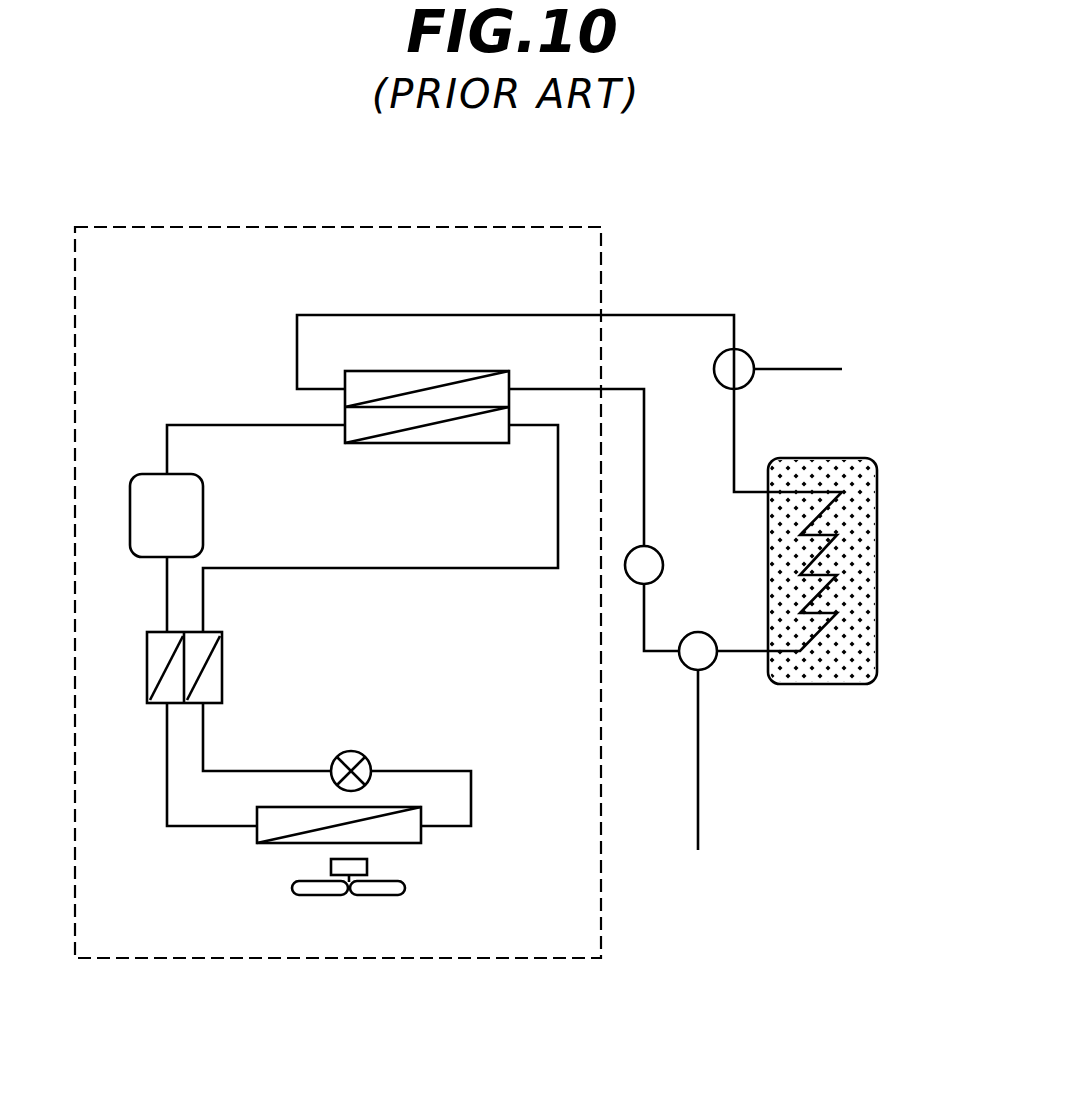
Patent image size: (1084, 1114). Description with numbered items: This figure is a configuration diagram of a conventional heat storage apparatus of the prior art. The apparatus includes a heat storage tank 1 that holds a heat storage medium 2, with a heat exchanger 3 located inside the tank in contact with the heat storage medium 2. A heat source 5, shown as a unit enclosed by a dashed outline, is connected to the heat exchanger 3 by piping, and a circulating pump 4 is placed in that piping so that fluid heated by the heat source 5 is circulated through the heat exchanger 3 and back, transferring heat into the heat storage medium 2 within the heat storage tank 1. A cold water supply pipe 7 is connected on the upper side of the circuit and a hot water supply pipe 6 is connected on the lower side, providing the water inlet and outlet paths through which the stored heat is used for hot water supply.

The heat storage tank 1 is at (822, 684).
The heat storage medium 2 is at (877, 560).
The heat exchanger 3 is at (820, 492).
The circulating pump 4 is at (661, 558).
The heat source 5 is at (337, 958).
The hot water supply pipe 6 is at (697, 803).
The cold water supply pipe 7 is at (798, 369).